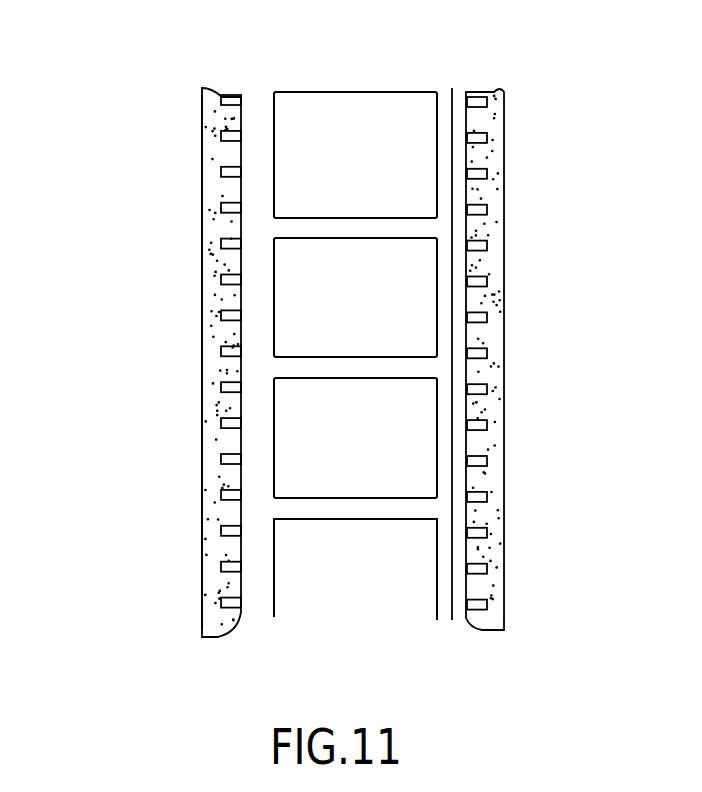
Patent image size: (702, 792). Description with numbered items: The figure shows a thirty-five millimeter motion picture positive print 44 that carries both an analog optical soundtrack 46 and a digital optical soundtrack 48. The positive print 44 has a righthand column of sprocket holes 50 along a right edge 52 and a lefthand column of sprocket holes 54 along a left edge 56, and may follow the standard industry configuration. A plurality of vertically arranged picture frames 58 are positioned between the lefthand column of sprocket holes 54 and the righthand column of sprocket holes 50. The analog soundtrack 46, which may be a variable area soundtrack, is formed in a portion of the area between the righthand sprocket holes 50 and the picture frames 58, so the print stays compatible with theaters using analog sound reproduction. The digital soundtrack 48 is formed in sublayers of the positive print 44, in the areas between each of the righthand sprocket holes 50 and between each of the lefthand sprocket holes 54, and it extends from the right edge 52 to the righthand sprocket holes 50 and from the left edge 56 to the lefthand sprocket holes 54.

The motion picture positive print 44 is at (124, 154).
The analog optical soundtrack 46 is at (452, 620).
The digital optical soundtrack 48 is at (203, 291).
The righthand column of sprocket holes 50 is at (482, 78).
The right edge 52 is at (505, 151).
The lefthand column of sprocket holes 54 is at (226, 80).
The left edge 56 is at (200, 515).
The picture frames 58 is at (298, 646).